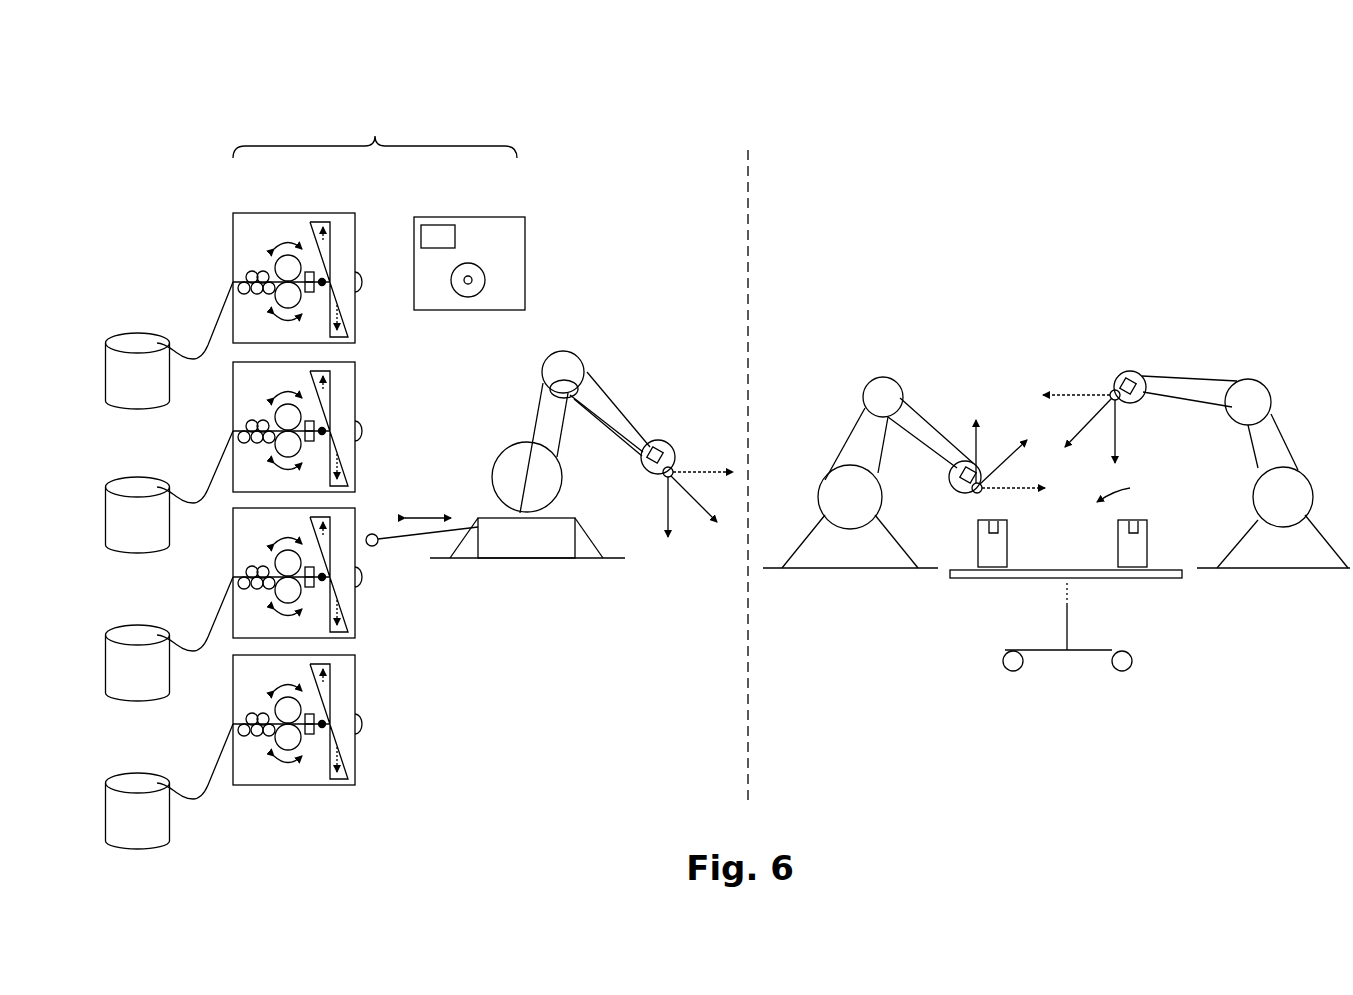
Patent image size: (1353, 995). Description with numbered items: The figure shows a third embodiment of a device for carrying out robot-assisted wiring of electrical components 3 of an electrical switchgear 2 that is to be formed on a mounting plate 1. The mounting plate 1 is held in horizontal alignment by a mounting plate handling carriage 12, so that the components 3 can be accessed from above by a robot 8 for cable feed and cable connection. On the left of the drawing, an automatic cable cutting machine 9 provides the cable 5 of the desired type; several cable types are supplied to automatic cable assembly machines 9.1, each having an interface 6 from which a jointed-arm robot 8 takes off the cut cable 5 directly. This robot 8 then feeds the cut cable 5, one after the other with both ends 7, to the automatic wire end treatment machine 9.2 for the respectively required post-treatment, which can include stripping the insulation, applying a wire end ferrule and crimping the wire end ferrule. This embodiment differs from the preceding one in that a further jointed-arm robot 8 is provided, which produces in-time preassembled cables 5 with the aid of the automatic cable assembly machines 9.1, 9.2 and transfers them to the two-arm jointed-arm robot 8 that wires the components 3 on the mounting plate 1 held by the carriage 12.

The mounting plate 1 is at (1170, 582).
The electrical switchgear 2 is at (1124, 482).
The electrical components 3 is at (995, 547).
The cable 5 is at (164, 345).
The interface 6 is at (358, 283).
The cable ends 7 is at (675, 468).
The jointed-arm robot 8 is at (565, 367).
The automatic cable cutting machine 9 is at (375, 132).
The automatic cable assembly machine 9.1 is at (290, 233).
The automatic wire end treatment machine 9.2 is at (467, 230).
The mounting plate handling carriage 12 is at (1067, 627).